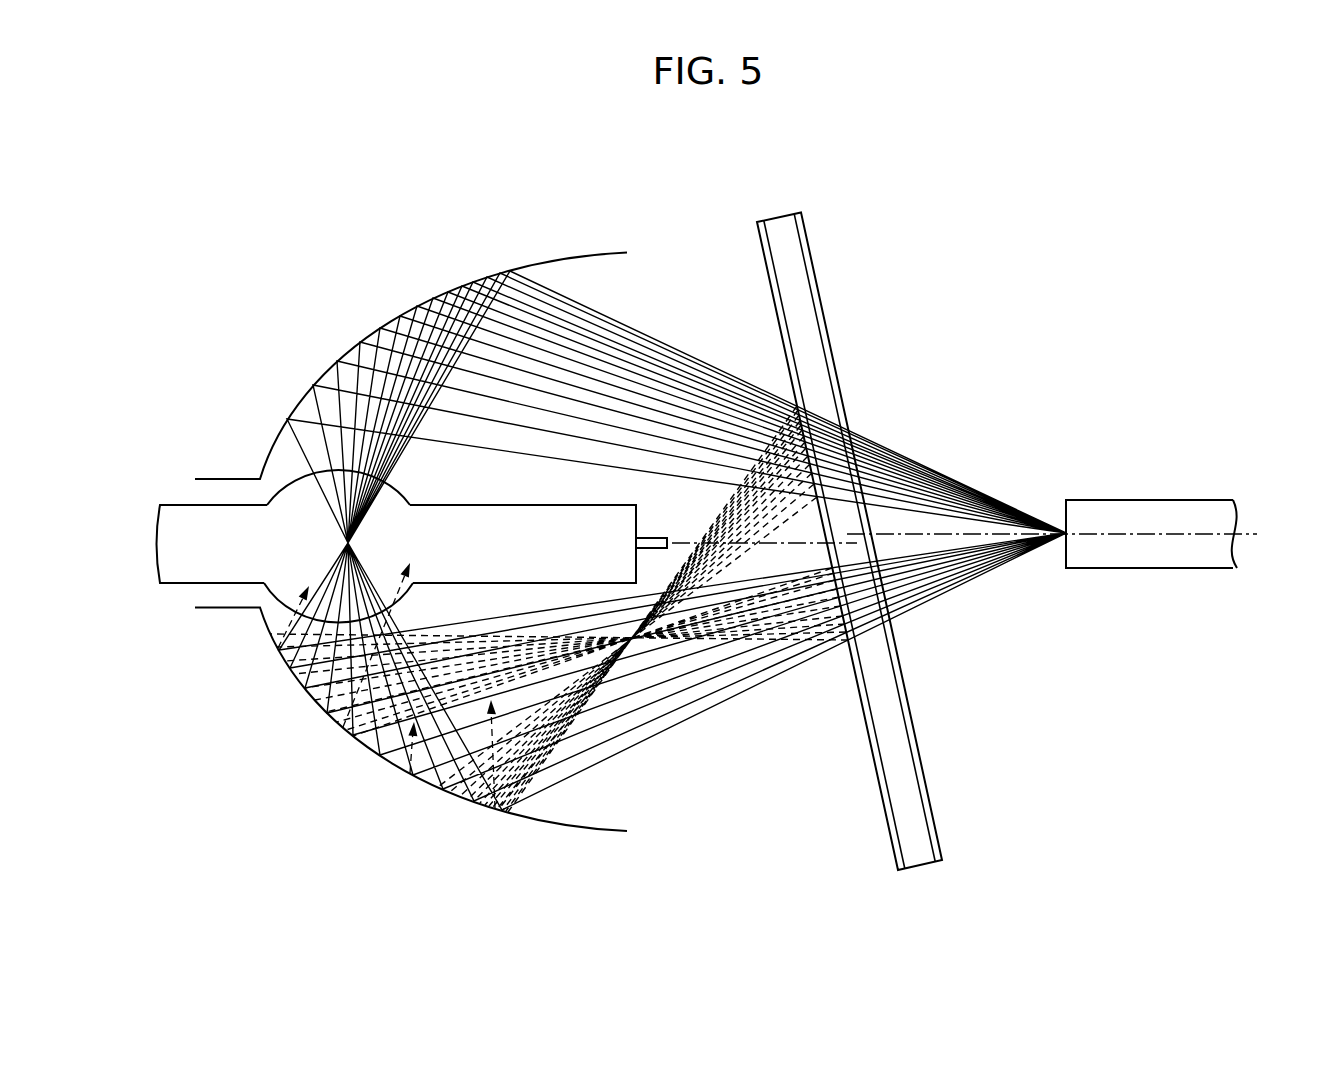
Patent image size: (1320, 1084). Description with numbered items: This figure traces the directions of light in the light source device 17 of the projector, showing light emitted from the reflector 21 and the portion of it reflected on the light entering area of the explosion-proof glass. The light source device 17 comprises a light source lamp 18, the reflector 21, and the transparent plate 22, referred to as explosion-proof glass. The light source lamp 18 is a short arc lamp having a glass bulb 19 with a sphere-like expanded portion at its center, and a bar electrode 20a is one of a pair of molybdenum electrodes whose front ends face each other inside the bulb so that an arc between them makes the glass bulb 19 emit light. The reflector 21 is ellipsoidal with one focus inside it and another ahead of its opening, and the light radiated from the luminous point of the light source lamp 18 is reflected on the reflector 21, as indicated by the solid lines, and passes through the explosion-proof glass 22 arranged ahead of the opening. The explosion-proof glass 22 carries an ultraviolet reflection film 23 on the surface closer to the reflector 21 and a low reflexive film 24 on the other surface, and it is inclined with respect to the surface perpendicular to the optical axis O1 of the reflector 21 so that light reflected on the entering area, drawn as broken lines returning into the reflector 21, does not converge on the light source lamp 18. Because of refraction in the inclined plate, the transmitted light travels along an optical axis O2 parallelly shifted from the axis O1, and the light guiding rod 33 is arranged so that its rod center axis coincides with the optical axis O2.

The light source device 17 is at (395, 826).
The light source lamp 18 is at (188, 598).
The glass bulb 19 is at (466, 573).
The bar electrode 20a is at (650, 537).
The reflector 21 is at (575, 830).
The transparent plate 22 is at (873, 560).
The ultraviolet reflection film 23 is at (877, 770).
The low reflexive film 24 is at (922, 768).
The light guiding rod 33 is at (1157, 570).
The optical axis of light emitted from the reflector O1 is at (800, 545).
The optical axis of light that has passed through the explosion-proof glass O2 is at (913, 535).